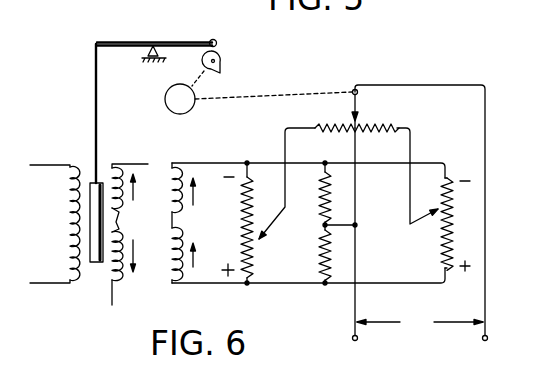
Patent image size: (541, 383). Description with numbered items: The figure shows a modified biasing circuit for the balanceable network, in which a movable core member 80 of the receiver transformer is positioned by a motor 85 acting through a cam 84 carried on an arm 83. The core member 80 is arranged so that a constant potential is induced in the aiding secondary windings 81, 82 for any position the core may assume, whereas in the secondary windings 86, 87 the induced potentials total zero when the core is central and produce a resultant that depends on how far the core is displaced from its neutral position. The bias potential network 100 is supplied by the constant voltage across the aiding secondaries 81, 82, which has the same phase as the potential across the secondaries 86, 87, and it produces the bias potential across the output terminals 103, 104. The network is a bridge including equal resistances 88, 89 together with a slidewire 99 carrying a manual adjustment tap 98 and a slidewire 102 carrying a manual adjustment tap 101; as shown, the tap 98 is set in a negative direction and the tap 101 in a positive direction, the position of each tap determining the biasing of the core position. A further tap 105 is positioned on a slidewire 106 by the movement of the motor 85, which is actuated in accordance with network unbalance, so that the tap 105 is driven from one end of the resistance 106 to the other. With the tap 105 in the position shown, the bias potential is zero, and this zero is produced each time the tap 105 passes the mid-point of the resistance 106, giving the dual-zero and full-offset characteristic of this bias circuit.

The core member 80 is at (97, 217).
The secondary winding 81 is at (172, 171).
The secondary winding 82 is at (172, 279).
The pivoted arm 83 is at (130, 42).
The cam 84 is at (221, 67).
The motor 85 is at (167, 108).
The secondary winding 86 is at (127, 209).
The secondary winding 87 is at (127, 232).
The resistance 88 is at (322, 201).
The resistance 89 is at (322, 252).
The manual adjustment tap 98 is at (421, 222).
The slidewire 99 is at (437, 250).
The bias potential network 100 is at (298, 280).
The manual adjustment tap 101 is at (274, 231).
The slidewire 102 is at (243, 200).
The terminal 103 is at (413, 246).
The terminal 104 is at (430, 224).
The tap 105 is at (360, 94).
The slidewire 106 is at (365, 134).